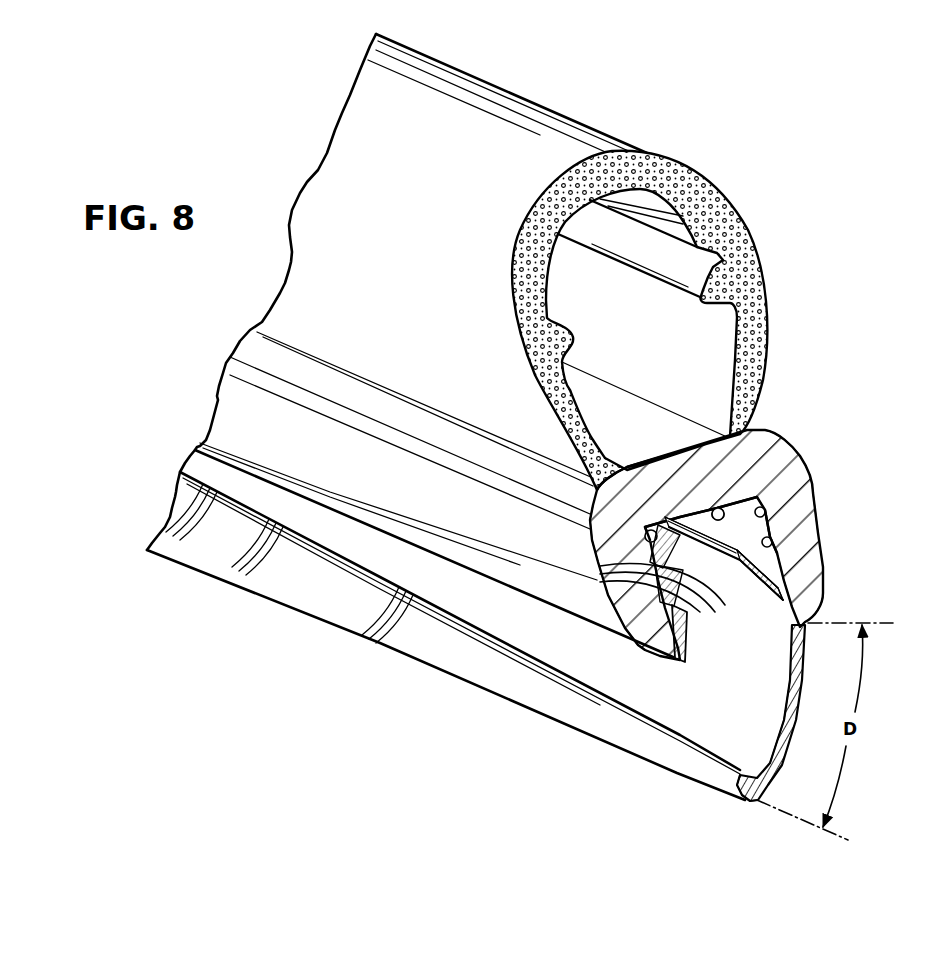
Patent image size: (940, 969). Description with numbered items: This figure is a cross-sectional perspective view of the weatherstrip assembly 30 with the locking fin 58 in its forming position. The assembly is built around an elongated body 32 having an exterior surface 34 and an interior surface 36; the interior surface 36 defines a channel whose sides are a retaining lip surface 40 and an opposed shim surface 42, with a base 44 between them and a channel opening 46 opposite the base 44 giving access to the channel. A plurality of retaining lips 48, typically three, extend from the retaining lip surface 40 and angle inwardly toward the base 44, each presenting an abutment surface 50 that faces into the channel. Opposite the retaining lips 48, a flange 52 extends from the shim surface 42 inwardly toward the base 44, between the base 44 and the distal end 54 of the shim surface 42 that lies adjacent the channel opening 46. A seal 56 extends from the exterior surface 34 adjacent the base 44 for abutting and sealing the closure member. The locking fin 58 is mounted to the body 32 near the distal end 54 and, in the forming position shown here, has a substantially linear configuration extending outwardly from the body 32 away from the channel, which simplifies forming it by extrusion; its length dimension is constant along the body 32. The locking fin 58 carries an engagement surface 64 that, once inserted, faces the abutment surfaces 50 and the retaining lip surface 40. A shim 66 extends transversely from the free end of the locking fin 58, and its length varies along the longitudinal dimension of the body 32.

The weatherstrip assembly 30 is at (707, 119).
The body 32 is at (813, 489).
The exterior surface 34 is at (793, 442).
The interior surface 36 is at (770, 513).
The retaining lip surface 40 is at (600, 522).
The shim surface 42 is at (787, 550).
The base 44 is at (712, 507).
The channel opening 46 is at (683, 664).
The retaining lips 48 is at (600, 582).
The abutment surface 50 is at (700, 610).
The flange 52 is at (760, 600).
The distal end 54 is at (800, 615).
The seal 56 is at (737, 237).
The locking fin 58 is at (797, 705).
The engagement surface 64 is at (792, 733).
The shim 66 is at (752, 797).